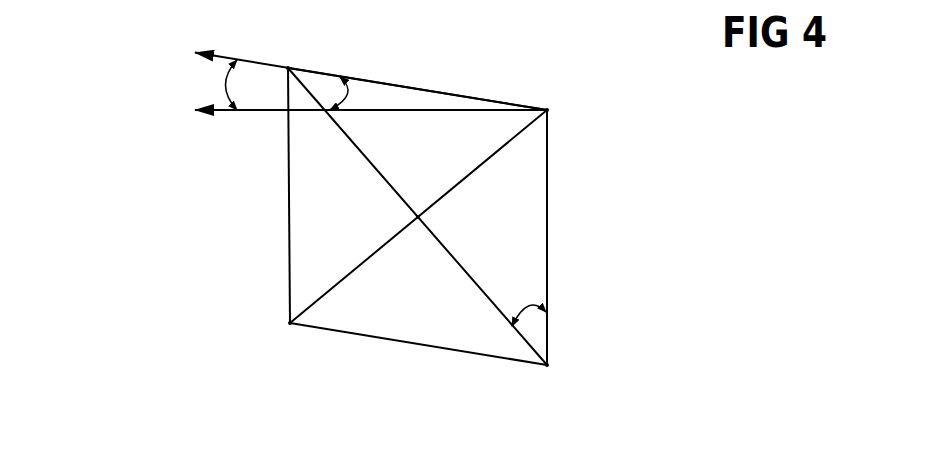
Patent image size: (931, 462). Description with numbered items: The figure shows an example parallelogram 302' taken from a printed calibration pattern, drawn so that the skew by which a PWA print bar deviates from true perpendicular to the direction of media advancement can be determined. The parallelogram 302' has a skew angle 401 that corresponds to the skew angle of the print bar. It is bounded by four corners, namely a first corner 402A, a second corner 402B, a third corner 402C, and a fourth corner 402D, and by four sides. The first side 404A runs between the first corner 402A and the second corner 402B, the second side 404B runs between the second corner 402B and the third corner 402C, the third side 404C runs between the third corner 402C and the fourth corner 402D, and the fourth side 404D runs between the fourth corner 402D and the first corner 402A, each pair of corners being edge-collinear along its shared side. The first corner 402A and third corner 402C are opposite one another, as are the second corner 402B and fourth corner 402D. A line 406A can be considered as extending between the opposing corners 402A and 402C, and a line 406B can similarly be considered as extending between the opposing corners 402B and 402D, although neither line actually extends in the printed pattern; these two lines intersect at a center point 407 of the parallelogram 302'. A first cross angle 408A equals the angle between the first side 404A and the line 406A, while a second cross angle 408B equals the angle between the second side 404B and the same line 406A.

The parallelogram 302' is at (295, 60).
The skew angle 401 is at (226, 89).
The first corner 402A is at (288, 67).
The second corner 402B is at (547, 110).
The third corner 402C is at (547, 370).
The fourth corner 402D is at (290, 324).
The first side 404A is at (417, 88).
The second side 404B is at (547, 230).
The third side 404C is at (400, 342).
The fourth side 404D is at (289, 195).
The line 406A is at (360, 152).
The line 406B is at (372, 255).
The center point 407 is at (415, 214).
The first cross angle 408A is at (347, 92).
The second cross angle 408B is at (521, 310).